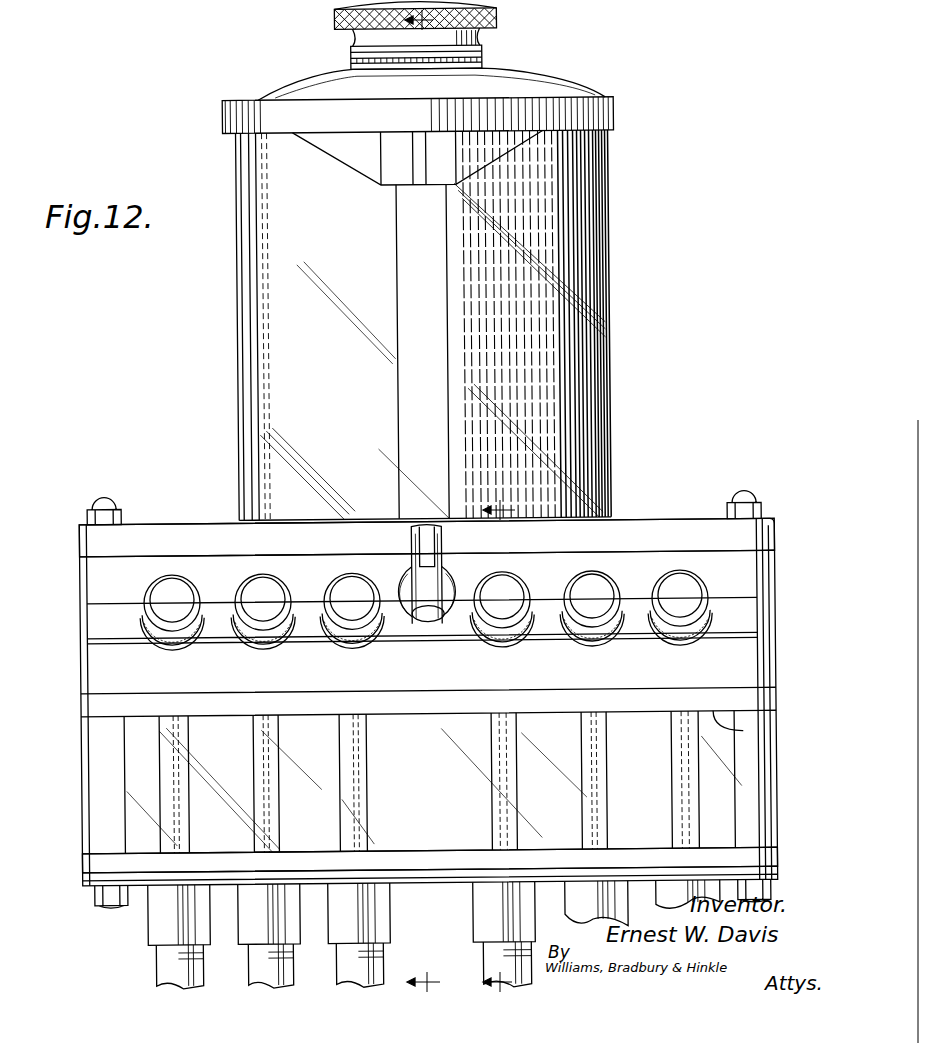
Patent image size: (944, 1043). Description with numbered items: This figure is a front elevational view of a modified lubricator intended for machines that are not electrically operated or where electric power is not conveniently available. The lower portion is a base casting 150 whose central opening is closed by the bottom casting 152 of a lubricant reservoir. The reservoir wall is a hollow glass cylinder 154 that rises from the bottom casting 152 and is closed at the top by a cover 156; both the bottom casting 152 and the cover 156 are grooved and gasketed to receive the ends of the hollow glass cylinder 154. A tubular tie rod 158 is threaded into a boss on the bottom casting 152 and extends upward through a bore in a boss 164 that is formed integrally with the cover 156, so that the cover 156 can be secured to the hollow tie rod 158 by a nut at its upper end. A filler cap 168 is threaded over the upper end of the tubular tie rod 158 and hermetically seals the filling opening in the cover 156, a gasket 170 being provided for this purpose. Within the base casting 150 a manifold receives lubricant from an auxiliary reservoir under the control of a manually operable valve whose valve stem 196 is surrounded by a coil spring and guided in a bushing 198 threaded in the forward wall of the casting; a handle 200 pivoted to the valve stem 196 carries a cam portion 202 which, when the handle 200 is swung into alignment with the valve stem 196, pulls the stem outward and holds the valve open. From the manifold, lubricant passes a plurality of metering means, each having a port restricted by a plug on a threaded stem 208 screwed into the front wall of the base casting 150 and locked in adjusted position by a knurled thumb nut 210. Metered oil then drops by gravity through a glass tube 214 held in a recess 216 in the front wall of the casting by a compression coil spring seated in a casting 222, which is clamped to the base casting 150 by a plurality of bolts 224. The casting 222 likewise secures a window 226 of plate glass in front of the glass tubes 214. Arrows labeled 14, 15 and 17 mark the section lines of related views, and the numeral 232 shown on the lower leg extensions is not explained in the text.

The section arrow 14 is at (431, 20).
The section arrow 15 is at (511, 747).
The section arrow 17 is at (437, 983).
The base casting 150 is at (760, 665).
The bottom casting 152 is at (765, 537).
The hollow glass cylinder 154 is at (603, 272).
The cover 156 is at (540, 97).
The tubular tie rod 158 is at (405, 298).
The boss 164 is at (450, 163).
The filler cap 168 is at (487, 4).
The gasket 170 is at (487, 60).
The valve stem 196 is at (432, 548).
The bushing 198 is at (410, 576).
The handle 200 is at (426, 625).
The cam portion 202 is at (413, 535).
The threaded stem 208 is at (683, 590).
The knurled thumb nut 210 is at (695, 648).
The glass tube 214 is at (672, 750).
The recess 216 is at (745, 732).
The casting 222 is at (80, 862).
The bolts 224 is at (92, 896).
The window 226 is at (446, 828).
The leg extensions 232 is at (375, 968).